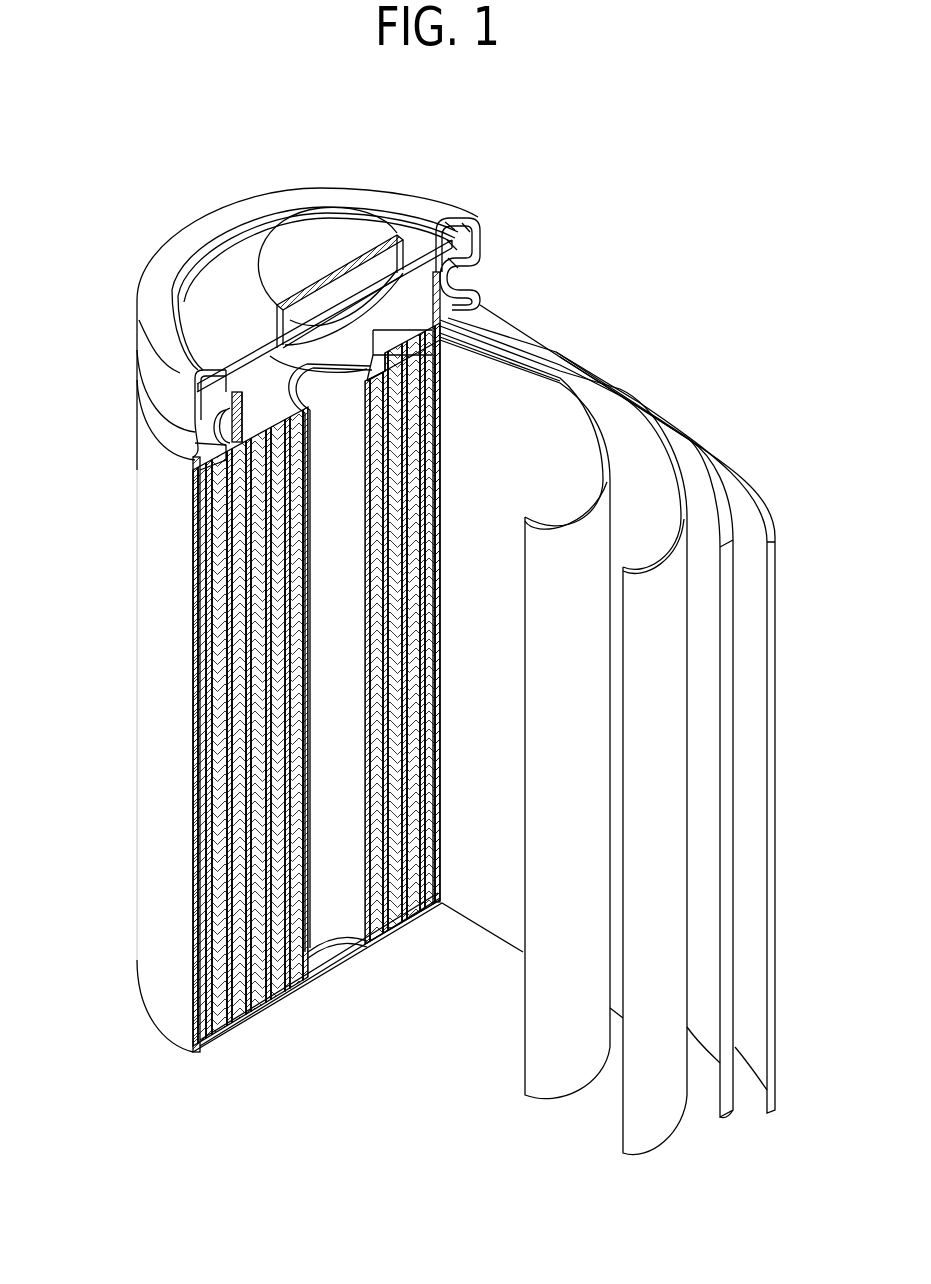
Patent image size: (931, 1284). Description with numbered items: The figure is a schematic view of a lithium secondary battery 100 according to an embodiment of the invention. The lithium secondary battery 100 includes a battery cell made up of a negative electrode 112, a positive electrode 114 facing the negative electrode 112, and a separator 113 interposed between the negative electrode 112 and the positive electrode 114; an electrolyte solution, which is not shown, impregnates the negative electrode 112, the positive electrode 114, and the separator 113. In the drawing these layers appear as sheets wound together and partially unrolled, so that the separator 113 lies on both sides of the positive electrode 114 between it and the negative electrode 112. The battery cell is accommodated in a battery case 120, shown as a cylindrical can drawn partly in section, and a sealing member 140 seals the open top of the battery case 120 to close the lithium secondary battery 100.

The lithium secondary battery 100 is at (470, 195).
The negative electrode 112 is at (768, 510).
The separator 113 is at (510, 370).
The positive electrode 114 is at (634, 452).
The battery case 120 is at (150, 729).
The sealing member 140 is at (300, 238).